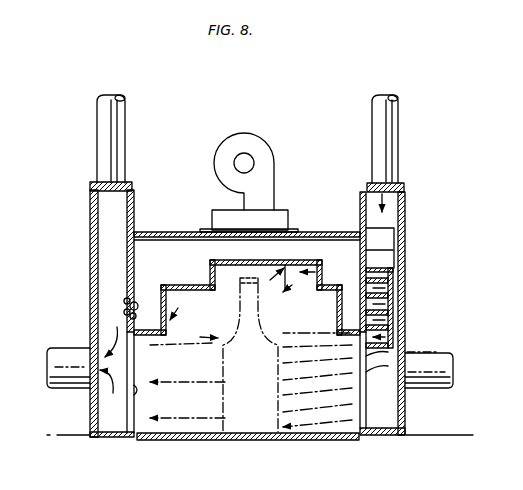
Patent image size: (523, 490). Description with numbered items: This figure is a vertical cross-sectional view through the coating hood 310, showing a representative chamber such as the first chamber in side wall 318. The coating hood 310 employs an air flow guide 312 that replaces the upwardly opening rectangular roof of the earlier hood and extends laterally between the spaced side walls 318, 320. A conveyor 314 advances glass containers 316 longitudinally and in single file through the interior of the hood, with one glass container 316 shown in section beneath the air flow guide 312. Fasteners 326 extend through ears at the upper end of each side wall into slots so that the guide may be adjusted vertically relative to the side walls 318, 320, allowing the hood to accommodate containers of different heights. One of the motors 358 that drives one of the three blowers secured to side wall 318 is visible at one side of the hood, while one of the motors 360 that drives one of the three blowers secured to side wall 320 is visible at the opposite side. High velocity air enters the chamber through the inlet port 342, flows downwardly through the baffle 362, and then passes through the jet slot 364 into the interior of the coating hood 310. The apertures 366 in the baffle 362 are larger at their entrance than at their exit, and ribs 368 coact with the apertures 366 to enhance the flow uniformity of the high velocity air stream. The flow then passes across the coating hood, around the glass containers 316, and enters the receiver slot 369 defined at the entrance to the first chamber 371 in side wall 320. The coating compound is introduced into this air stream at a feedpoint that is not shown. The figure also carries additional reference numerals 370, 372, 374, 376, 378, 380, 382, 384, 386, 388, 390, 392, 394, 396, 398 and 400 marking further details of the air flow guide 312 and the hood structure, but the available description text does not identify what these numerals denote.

The coating hood 310 is at (89, 249).
The air flow guide 312 is at (150, 231).
The conveyor 314 is at (345, 441).
The glass containers 316 is at (230, 324).
The side wall 318 is at (406, 318).
The side wall 320 is at (90, 310).
The fasteners 326 is at (126, 299).
The inlet port 342 is at (385, 284).
The motor 358 is at (442, 368).
The motor 360 is at (62, 356).
The baffle 362 is at (398, 302).
The jet slot 364 is at (378, 358).
The apertures 366 is at (398, 318).
The ribs 368 is at (368, 272).
The receiver slot 369 is at (133, 393).
The right column cap 370 is at (310, 236).
The first chamber 371 is at (126, 233).
The right tube 372 is at (333, 260).
The hood 374 is at (139, 252).
The air flow arrows 376 is at (358, 363).
The hood step 378 is at (340, 306).
The bottle 380 is at (258, 300).
The baffle 382 is at (298, 247).
The mounting block 384 is at (250, 220).
The opening 386 is at (137, 337).
The hood side wall 388 is at (163, 312).
The plate 390 is at (212, 242).
The chamber 392 is at (216, 270).
The hook 394 is at (250, 143).
The bracket 396 is at (212, 222).
The mounting plate 398 is at (260, 231).
The chamber 400 is at (283, 254).